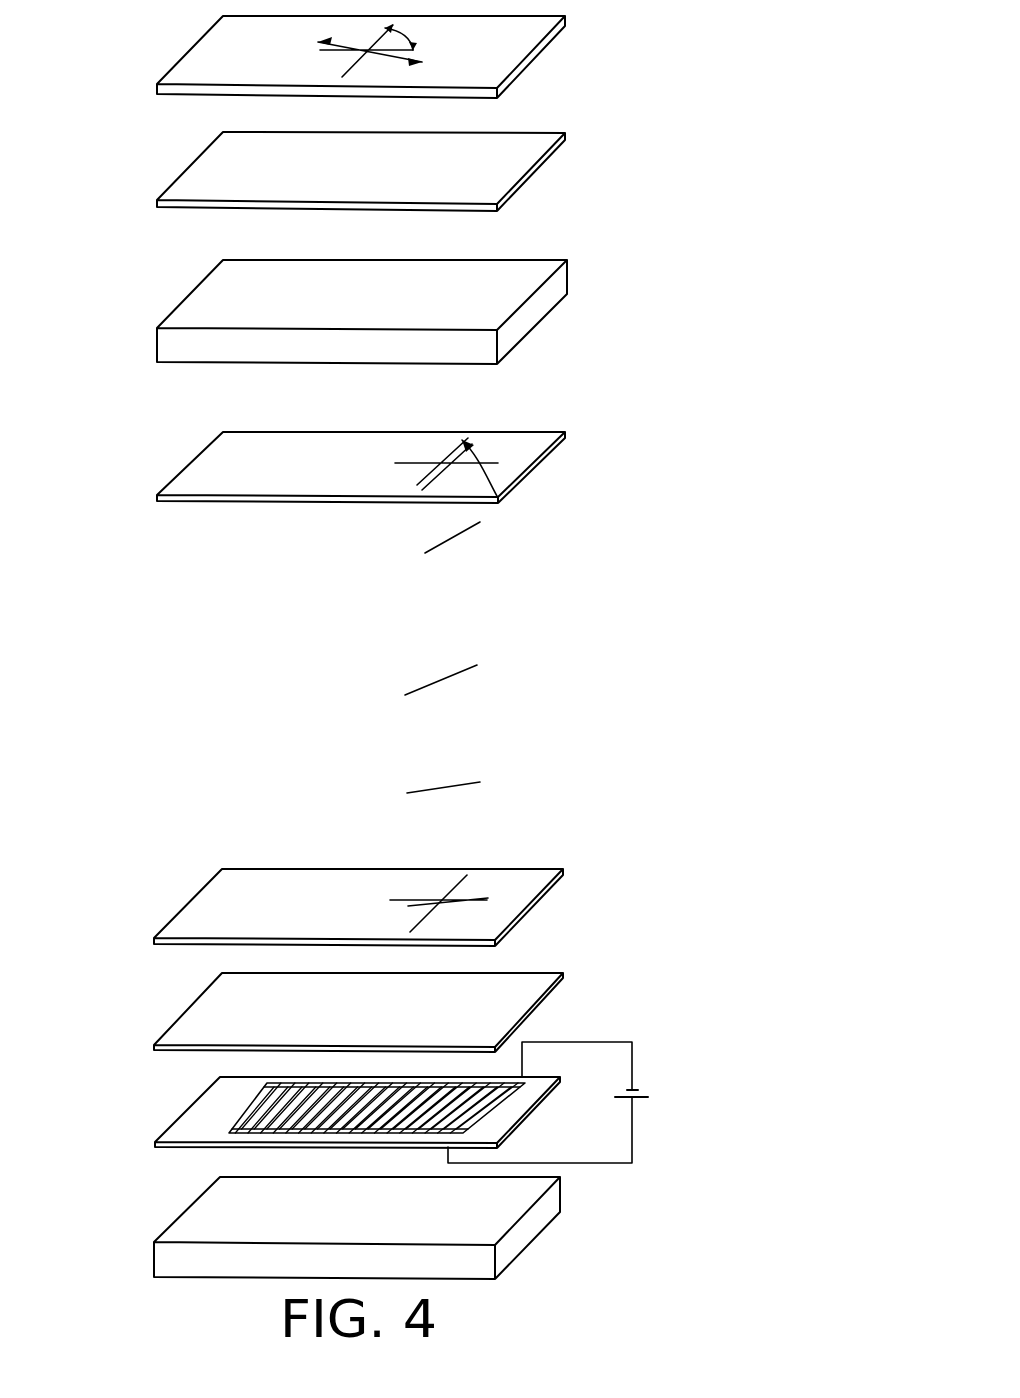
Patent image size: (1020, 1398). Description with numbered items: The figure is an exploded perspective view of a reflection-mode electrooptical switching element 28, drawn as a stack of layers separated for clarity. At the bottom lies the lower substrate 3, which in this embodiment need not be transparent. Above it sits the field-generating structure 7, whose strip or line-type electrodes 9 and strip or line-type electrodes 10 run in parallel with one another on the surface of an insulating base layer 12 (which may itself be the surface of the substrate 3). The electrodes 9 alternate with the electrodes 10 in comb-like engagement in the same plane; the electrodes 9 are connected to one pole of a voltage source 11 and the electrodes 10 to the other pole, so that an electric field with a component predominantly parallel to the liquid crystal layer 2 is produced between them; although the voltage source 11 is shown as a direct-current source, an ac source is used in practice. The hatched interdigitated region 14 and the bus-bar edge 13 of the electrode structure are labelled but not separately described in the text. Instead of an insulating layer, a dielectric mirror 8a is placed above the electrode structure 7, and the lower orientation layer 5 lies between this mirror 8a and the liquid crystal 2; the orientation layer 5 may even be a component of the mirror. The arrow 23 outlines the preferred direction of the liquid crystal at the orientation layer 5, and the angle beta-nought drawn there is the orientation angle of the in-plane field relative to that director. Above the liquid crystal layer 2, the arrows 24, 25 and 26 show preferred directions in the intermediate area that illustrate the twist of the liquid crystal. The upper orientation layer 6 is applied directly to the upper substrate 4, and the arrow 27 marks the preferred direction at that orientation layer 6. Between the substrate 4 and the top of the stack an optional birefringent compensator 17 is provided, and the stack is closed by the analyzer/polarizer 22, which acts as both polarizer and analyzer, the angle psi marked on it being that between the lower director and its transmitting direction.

The analyzer/polarizer 22 is at (533, 30).
The birefringent compensator 17 is at (538, 170).
The upper substrate 4 is at (545, 300).
The upper orientation layer 6 is at (537, 443).
The arrow 27 is at (498, 497).
The arrow 26 is at (462, 533).
The electrooptical switching element 28 is at (133, 619).
The liquid crystal layer 2 is at (302, 733).
The arrow 25 is at (450, 677).
The arrow 24 is at (450, 783).
The lower orientation layer 5 is at (550, 888).
The arrow 23 is at (470, 899).
The dielectric mirror 8a is at (545, 1002).
The insulating base layer 12 is at (168, 1138).
The field-generating structure 7 is at (186, 1093).
The interdigitated electrode region 14 is at (297, 1078).
The strip or line-type electrodes 10 is at (240, 1112).
The electrode bus bar 13 is at (265, 1137).
The strip or line-type electrodes 9 is at (227, 1130).
The voltage source 11 is at (643, 1090).
The lower substrate 3 is at (520, 1235).